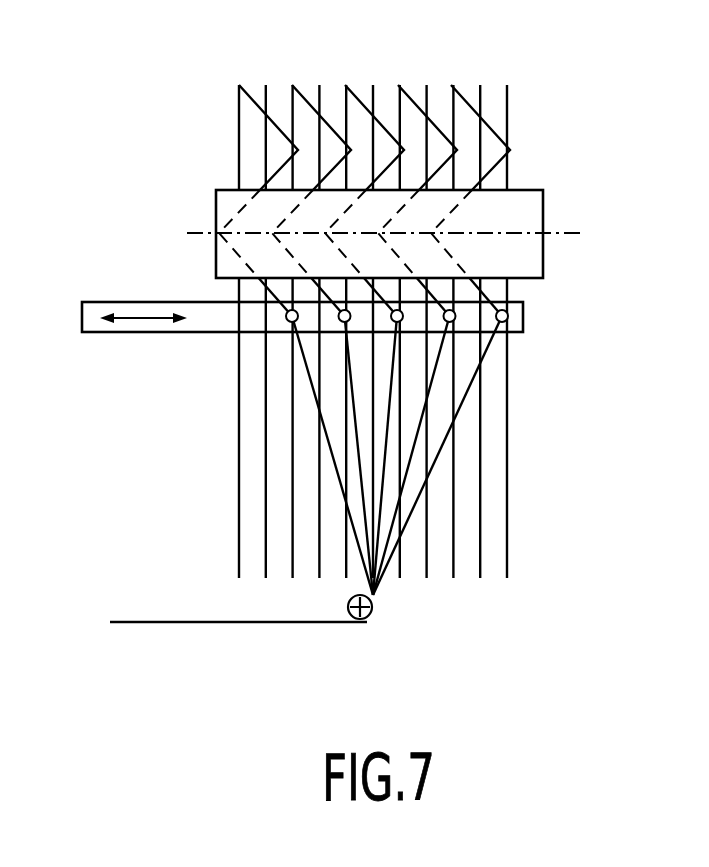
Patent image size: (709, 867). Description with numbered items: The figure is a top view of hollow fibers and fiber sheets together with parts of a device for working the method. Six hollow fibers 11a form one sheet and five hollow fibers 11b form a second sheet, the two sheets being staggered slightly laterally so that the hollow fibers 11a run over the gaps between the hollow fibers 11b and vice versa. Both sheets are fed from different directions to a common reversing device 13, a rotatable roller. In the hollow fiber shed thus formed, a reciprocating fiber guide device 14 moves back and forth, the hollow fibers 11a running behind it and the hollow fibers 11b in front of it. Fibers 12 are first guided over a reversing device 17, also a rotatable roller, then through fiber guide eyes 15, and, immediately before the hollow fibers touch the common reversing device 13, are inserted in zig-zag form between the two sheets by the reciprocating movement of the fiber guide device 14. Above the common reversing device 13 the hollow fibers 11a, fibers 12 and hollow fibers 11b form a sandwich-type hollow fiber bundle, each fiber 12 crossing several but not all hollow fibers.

The hollow fibers 11a is at (239, 118).
The hollow fibers 11b is at (266, 158).
The fibers 12 is at (507, 122).
The common reversing device 13 is at (543, 193).
The fiber guide device 14 is at (150, 301).
The fiber guide eyes 15 is at (523, 316).
The reversing device 17 is at (367, 619).